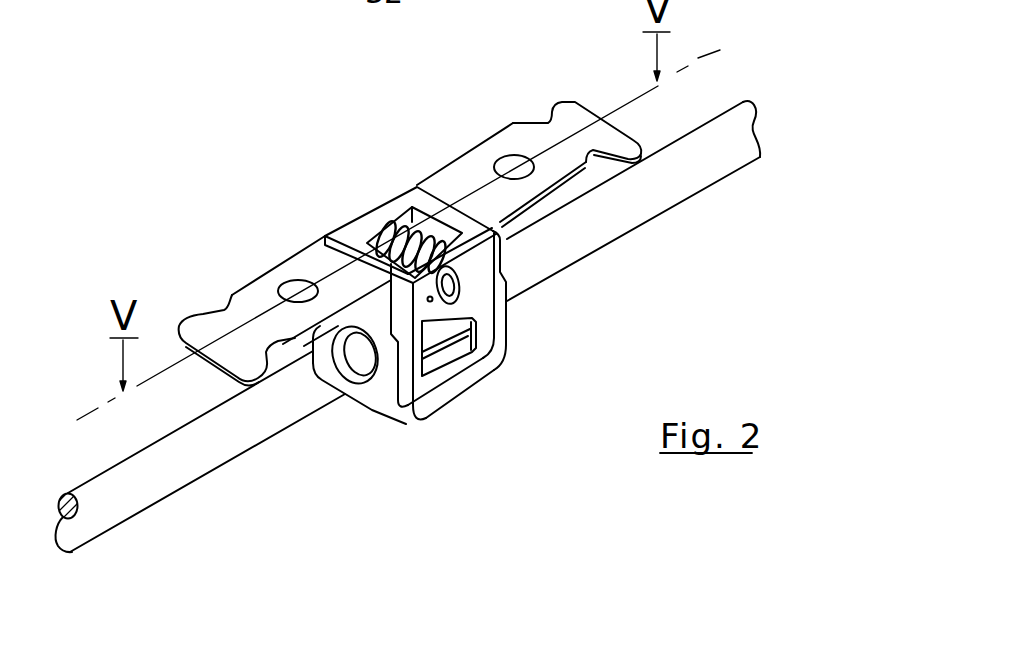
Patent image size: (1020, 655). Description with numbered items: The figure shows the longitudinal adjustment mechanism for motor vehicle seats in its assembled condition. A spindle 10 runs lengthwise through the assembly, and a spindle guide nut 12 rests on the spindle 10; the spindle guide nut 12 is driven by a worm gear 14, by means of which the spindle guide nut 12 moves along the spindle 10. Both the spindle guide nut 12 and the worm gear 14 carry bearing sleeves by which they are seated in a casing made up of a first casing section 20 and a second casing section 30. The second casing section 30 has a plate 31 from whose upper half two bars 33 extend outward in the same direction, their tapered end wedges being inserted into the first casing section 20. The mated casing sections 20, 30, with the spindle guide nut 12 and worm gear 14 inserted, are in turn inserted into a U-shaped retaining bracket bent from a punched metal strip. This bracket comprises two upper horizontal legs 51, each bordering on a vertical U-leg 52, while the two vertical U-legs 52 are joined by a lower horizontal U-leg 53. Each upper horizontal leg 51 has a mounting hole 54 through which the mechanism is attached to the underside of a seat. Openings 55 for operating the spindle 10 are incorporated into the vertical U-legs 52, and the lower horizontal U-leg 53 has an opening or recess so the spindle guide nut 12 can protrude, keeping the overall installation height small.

The spindle 10 is at (730, 173).
The spindle guide nut 12 is at (450, 347).
The worm gear 14 is at (392, 226).
The first casing section 20 is at (483, 256).
The second casing section 30 is at (348, 245).
The plate 31 is at (410, 358).
The bars 33 is at (432, 301).
The upper horizontal legs 51 is at (243, 347).
The vertical U-legs 52 is at (500, 318).
The lower horizontal U-leg 53 is at (452, 395).
The mounting hole 54 is at (292, 290).
The openings 55 is at (355, 355).